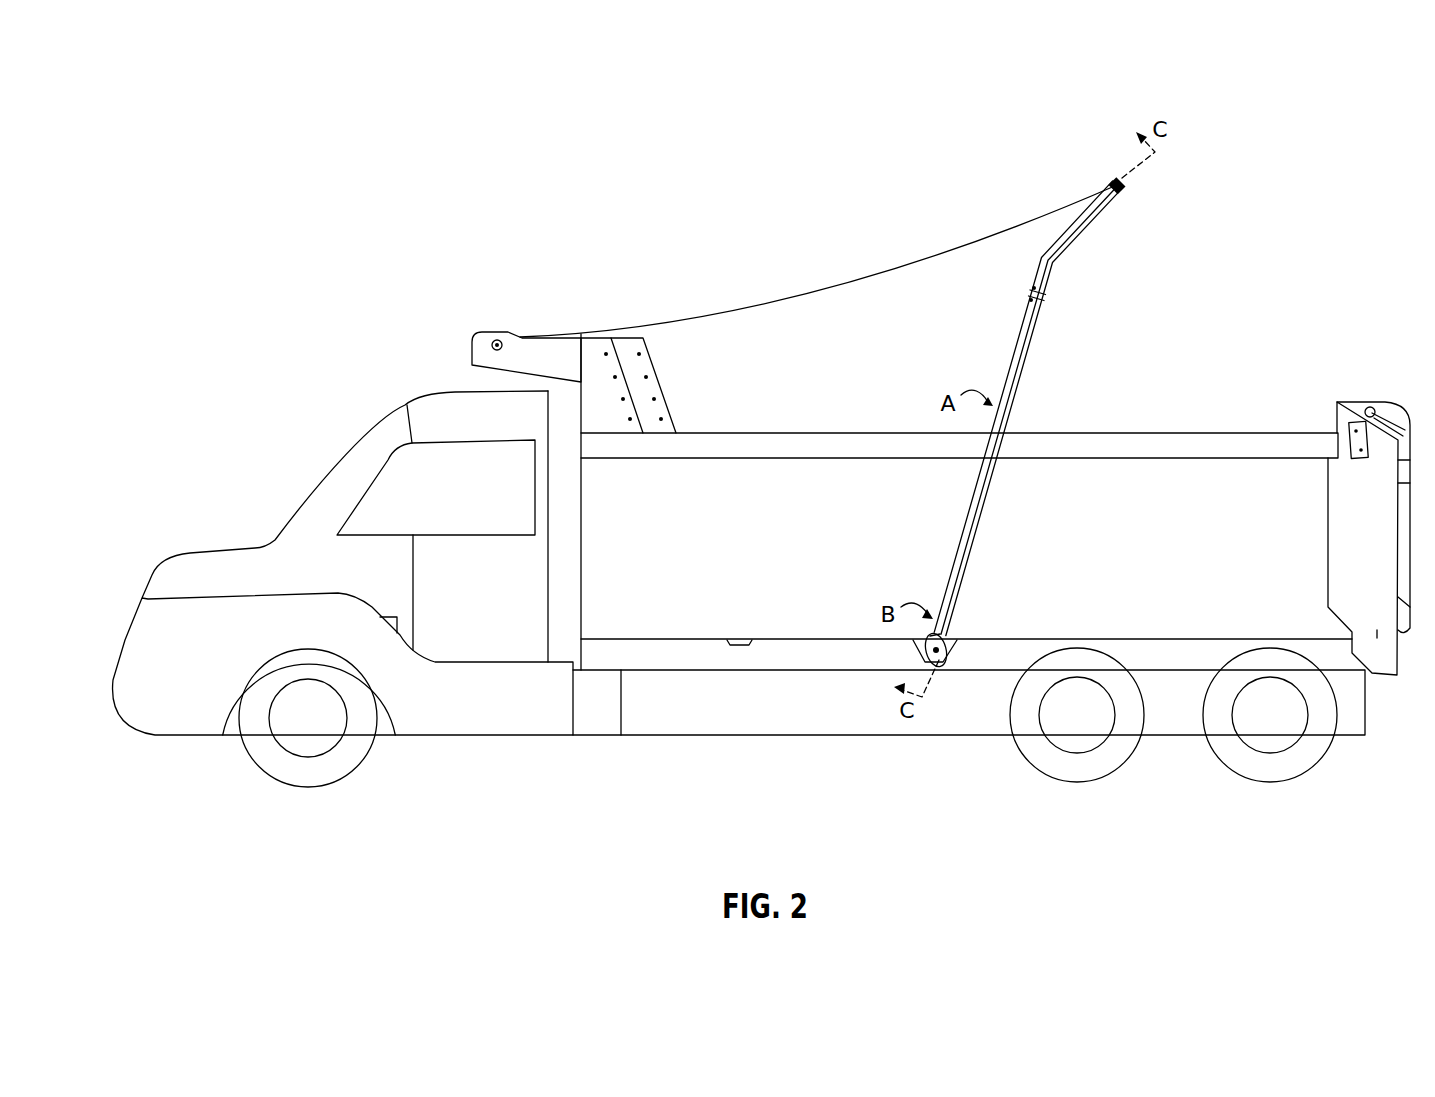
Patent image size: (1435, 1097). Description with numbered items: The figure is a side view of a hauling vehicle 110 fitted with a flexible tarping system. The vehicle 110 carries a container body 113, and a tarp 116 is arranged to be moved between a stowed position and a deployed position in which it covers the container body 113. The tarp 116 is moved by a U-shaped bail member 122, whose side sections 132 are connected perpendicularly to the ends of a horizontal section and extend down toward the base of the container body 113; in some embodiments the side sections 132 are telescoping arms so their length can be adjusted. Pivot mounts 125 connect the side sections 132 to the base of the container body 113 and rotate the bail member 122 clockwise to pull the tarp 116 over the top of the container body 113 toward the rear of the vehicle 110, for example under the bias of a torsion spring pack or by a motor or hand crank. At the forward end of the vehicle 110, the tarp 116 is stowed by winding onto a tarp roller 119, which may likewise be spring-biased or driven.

The vehicle 110 is at (1312, 256).
The container body 113 is at (1285, 432).
The tarp 116 is at (843, 287).
The tarp roller 119 is at (492, 332).
The bail member 122 is at (1108, 228).
The pivot mounts 125 is at (940, 670).
The side sections 132 is at (1047, 311).